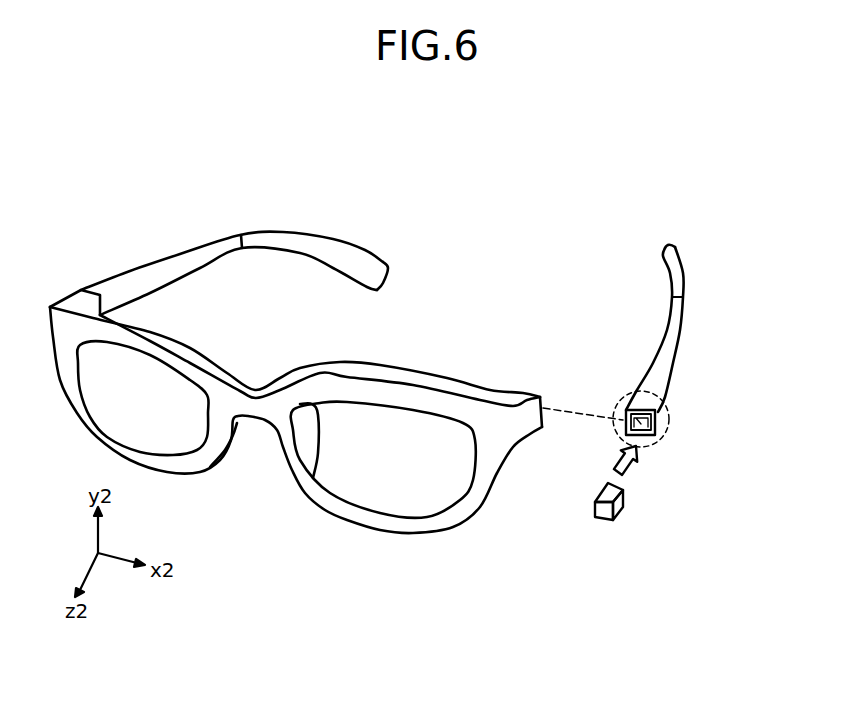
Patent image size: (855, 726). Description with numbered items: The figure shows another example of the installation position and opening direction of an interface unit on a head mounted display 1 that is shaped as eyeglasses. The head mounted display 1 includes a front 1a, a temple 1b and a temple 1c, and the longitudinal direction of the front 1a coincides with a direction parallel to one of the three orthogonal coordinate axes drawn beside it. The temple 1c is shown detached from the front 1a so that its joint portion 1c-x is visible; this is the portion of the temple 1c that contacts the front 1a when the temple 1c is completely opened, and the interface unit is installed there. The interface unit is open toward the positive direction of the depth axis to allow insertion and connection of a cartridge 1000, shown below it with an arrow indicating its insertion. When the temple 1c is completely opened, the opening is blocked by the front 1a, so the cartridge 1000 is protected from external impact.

The head mounted display 1 is at (256, 342).
The front 1a is at (413, 380).
The temple 1b is at (187, 258).
The temple 1c is at (673, 357).
The joint portion 1c-x is at (650, 445).
The cartridge 1000 is at (618, 508).